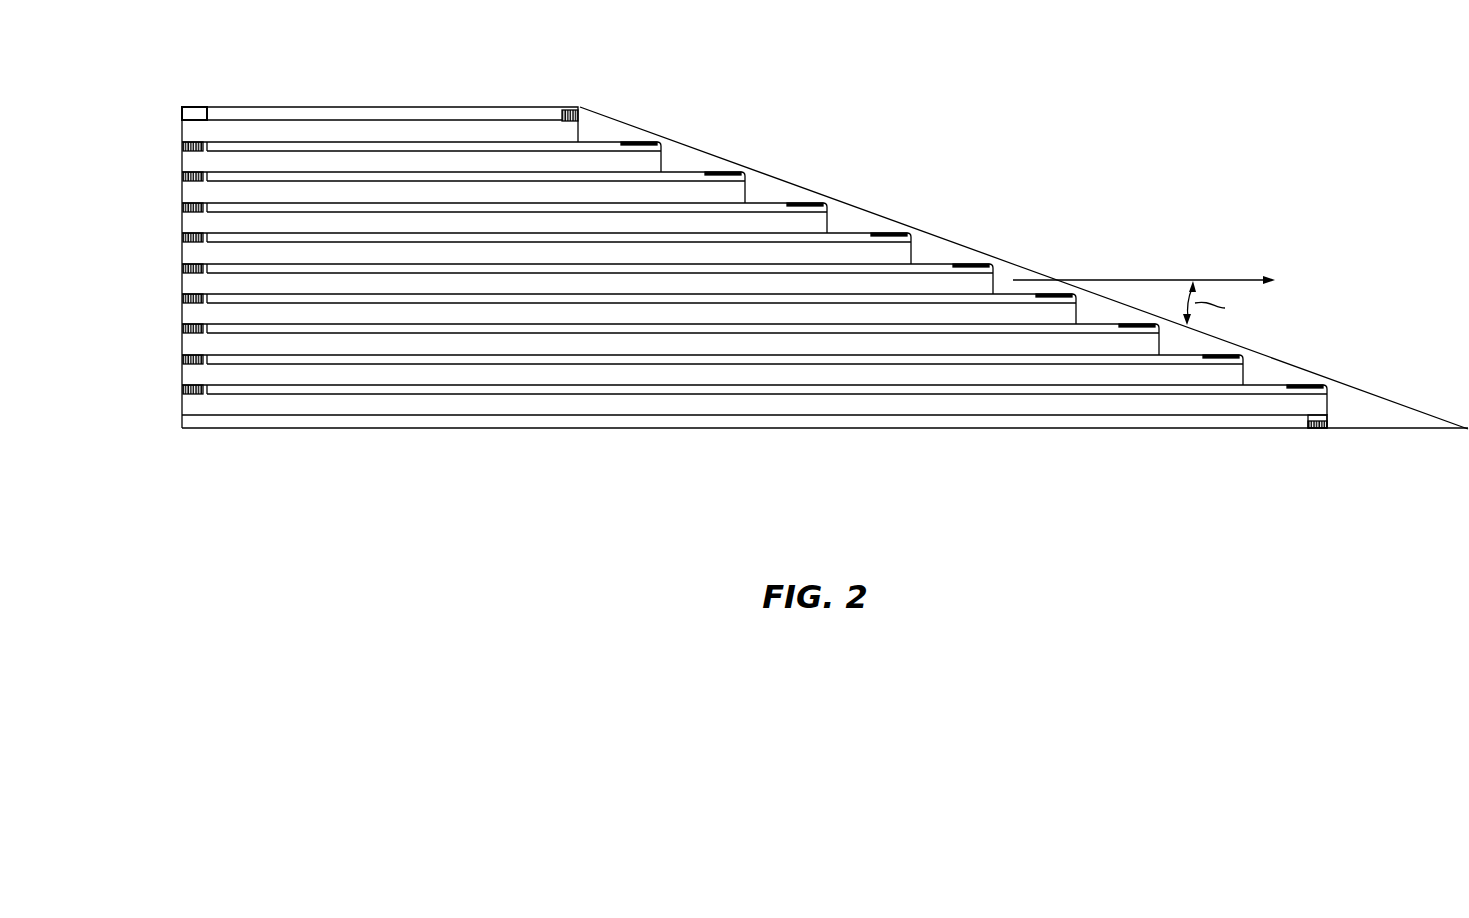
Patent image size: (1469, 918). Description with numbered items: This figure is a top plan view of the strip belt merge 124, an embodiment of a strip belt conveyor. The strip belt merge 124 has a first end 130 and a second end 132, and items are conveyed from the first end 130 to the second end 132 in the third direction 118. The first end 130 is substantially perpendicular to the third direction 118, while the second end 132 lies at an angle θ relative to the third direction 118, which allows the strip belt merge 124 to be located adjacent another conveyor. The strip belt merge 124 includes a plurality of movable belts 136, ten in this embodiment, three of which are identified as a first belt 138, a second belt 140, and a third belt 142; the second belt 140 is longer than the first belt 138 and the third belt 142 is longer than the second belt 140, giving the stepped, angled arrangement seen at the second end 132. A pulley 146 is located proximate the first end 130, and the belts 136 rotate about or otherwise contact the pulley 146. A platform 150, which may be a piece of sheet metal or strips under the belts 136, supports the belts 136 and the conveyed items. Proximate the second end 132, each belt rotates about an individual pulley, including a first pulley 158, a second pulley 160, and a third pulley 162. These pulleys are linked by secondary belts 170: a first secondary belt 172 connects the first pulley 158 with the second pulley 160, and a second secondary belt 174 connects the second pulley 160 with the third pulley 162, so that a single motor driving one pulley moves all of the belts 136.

The third direction 118 is at (1230, 280).
The strip belt merge 124 is at (1090, 86).
The first end 130 is at (182, 282).
The second end 132 is at (940, 232).
The belts 136 is at (407, 110).
The first belt 138 is at (490, 122).
The second belt 140 is at (243, 150).
The third belt 142 is at (236, 206).
The pulley 146 is at (182, 388).
The platform 150 is at (783, 192).
The first pulley 158 is at (572, 107).
The second pulley 160 is at (640, 140).
The third pulley 162 is at (733, 170).
The secondary belts 170 is at (710, 172).
The first secondary belt 172 is at (608, 140).
The second secondary belt 174 is at (743, 170).